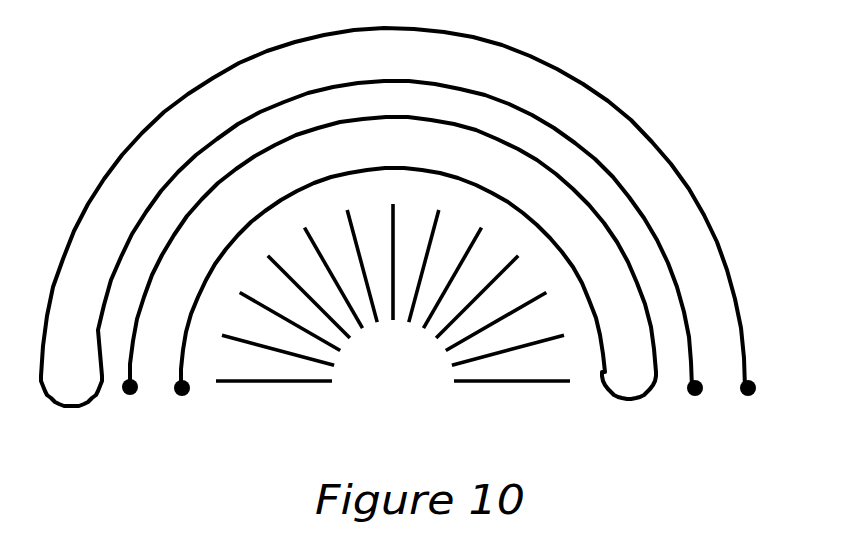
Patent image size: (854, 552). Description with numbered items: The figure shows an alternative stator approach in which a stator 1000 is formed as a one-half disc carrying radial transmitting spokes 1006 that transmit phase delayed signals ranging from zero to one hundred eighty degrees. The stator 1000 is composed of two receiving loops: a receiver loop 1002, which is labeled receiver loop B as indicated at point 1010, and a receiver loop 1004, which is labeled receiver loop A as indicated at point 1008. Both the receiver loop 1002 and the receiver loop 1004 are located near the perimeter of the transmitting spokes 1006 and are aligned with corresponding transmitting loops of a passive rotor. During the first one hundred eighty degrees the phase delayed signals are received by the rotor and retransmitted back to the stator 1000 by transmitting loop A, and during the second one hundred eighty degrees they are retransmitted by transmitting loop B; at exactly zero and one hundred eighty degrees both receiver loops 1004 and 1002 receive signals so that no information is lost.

The stator 1000 is at (163, 70).
The receiver loop 1002 is at (548, 92).
The receiver loop 1004 is at (570, 202).
The radial transmitting spokes 1006 is at (327, 428).
The point 1008 is at (158, 425).
The point 1010 is at (738, 412).